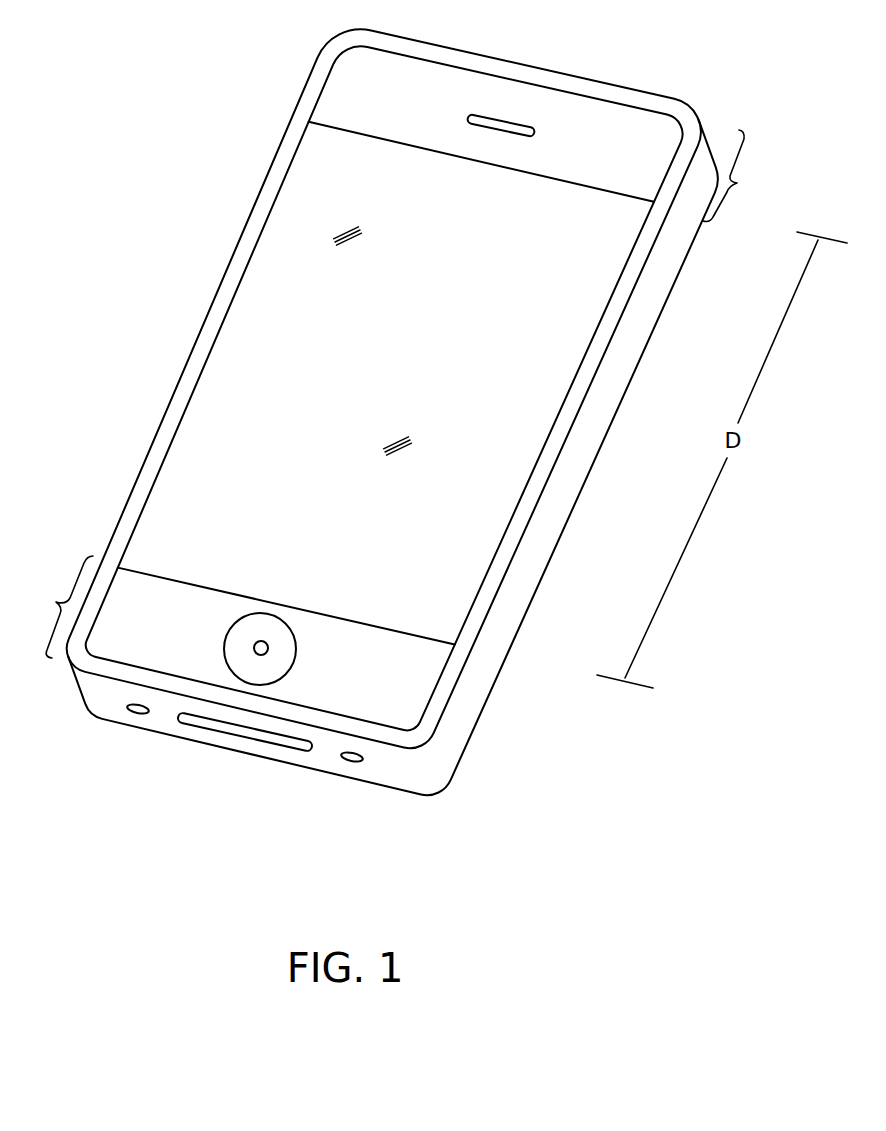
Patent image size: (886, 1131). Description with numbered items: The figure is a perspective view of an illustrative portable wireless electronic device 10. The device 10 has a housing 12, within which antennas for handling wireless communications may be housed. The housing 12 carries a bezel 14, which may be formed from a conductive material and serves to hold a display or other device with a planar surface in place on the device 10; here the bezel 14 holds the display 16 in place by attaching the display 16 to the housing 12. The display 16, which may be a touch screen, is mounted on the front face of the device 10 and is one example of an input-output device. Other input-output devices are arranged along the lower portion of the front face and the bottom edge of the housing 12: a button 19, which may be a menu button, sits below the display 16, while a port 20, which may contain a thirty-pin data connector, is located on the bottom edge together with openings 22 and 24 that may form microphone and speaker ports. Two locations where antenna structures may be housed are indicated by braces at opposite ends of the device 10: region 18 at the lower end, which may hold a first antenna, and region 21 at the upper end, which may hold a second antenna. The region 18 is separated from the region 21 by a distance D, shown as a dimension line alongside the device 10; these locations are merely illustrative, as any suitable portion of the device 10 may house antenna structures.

The electronic device 10 is at (762, 75).
The housing 12 is at (527, 578).
The bezel 14 is at (218, 297).
The display 16 is at (613, 233).
The region 18 is at (57, 607).
The button 19 is at (250, 685).
The port 20 is at (286, 748).
The region 21 is at (738, 176).
The opening 22 is at (137, 714).
The opening 24 is at (352, 762).